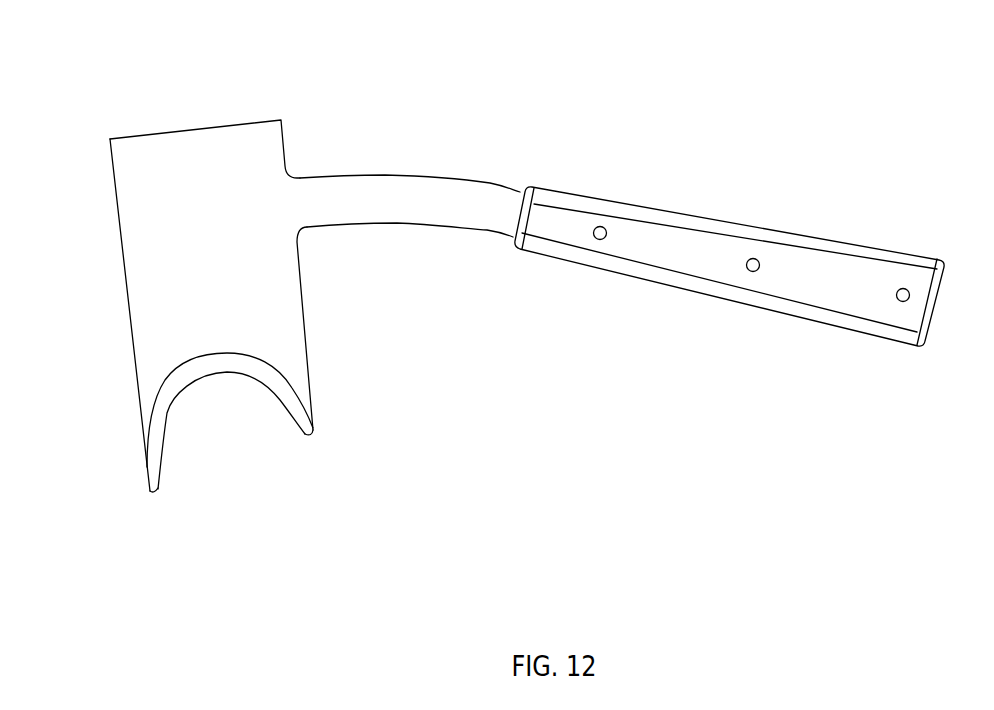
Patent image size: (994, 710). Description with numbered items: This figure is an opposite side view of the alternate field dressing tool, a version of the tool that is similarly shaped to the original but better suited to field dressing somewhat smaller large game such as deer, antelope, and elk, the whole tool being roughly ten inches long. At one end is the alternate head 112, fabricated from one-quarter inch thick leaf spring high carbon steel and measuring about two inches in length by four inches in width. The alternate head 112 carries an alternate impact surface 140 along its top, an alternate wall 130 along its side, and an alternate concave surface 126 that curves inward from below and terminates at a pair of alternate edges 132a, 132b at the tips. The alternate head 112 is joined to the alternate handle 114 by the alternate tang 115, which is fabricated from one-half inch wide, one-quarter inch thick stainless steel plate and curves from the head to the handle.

The alternate head 112 is at (108, 300).
The alternate handle 114 is at (708, 215).
The alternate tang 115 is at (405, 173).
The alternate concave surface 126 is at (220, 373).
The alternate wall 130 is at (302, 303).
The alternate edge 132a is at (313, 433).
The alternate edge 132b is at (152, 490).
The alternate impact surface 140 is at (198, 127).